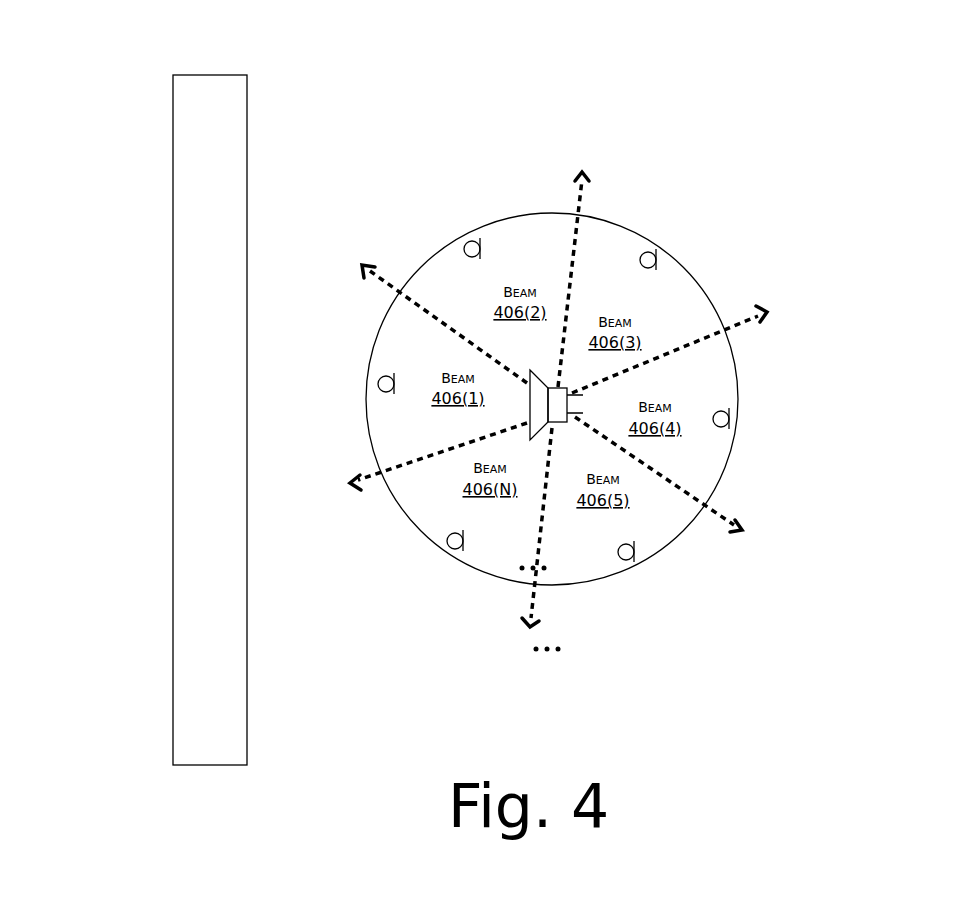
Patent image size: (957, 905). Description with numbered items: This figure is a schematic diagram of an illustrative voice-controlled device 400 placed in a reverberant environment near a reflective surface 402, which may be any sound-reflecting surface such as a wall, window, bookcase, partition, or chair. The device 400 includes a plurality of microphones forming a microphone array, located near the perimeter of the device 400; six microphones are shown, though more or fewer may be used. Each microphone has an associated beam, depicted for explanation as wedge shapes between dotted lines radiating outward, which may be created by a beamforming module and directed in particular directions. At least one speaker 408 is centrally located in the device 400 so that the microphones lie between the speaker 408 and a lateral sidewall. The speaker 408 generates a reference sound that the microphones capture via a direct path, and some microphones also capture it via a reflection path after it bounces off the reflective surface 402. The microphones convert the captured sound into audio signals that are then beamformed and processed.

The voice-controlled device 400 is at (870, 132).
The reflective surface 402 is at (173, 700).
The speaker 408 is at (566, 407).